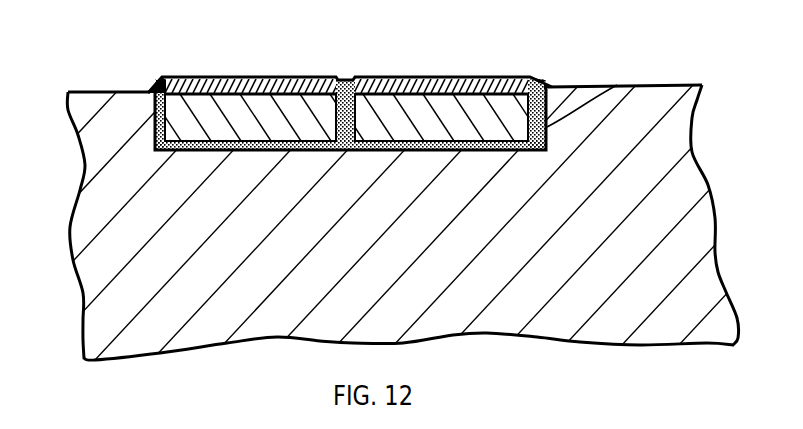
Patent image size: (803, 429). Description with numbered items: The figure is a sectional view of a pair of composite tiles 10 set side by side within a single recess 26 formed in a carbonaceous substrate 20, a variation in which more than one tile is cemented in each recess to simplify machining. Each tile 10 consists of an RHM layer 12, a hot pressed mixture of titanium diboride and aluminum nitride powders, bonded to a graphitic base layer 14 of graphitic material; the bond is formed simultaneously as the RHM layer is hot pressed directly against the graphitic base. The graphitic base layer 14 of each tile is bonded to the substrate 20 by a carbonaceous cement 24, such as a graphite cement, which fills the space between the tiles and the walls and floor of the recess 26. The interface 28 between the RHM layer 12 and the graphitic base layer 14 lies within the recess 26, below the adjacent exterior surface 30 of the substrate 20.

The composite tile 10 is at (365, 99).
The RHM layer 12 is at (243, 82).
The graphitic base layer 14 is at (357, 86).
The carbonaceous substrate 20 is at (527, 318).
The carbonaceous cement 24 is at (540, 77).
The recess 26 is at (617, 85).
The interface 28 is at (426, 77).
The exterior surface 30 is at (80, 70).